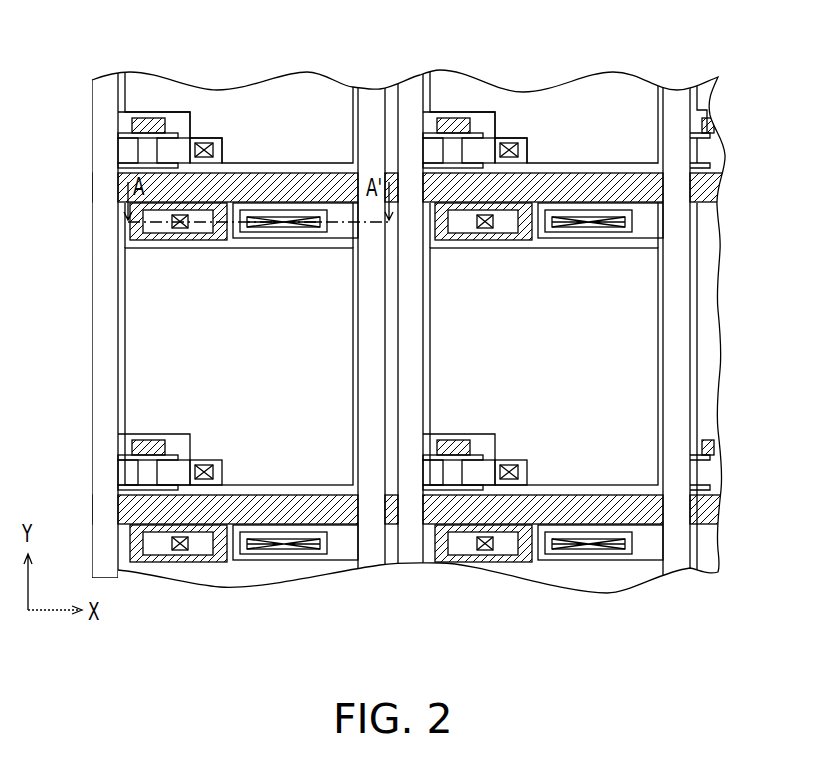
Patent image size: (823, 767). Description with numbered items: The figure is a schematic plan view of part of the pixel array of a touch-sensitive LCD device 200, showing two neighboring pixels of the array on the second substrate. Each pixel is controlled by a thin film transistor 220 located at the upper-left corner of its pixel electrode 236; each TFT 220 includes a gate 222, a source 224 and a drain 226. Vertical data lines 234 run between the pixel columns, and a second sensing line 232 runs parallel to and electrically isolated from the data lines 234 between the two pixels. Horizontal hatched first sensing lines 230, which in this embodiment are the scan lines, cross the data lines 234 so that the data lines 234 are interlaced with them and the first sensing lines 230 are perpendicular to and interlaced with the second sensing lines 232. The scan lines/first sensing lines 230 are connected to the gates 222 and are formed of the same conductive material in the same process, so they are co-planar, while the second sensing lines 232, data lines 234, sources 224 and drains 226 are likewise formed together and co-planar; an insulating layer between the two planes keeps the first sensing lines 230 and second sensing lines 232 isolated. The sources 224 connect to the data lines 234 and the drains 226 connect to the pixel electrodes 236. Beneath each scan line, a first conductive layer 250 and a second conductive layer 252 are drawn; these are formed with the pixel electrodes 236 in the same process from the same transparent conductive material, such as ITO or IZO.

The touch-sensitive LCD device 200 is at (692, 70).
The thin film transistor 220 is at (173, 110).
The gate 222 is at (150, 118).
The source 224 is at (125, 152).
The drain 226 is at (183, 147).
The first sensing line 230 is at (720, 180).
The second sensing line 232 is at (370, 87).
The data line 234 is at (105, 90).
The pixel electrode 236 is at (287, 140).
The first conductive layer 250 is at (163, 240).
The second conductive layer 252 is at (246, 238).